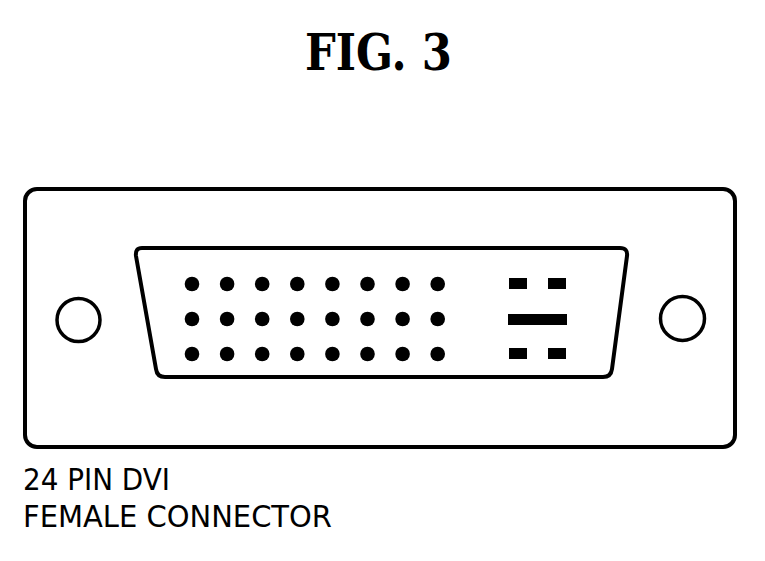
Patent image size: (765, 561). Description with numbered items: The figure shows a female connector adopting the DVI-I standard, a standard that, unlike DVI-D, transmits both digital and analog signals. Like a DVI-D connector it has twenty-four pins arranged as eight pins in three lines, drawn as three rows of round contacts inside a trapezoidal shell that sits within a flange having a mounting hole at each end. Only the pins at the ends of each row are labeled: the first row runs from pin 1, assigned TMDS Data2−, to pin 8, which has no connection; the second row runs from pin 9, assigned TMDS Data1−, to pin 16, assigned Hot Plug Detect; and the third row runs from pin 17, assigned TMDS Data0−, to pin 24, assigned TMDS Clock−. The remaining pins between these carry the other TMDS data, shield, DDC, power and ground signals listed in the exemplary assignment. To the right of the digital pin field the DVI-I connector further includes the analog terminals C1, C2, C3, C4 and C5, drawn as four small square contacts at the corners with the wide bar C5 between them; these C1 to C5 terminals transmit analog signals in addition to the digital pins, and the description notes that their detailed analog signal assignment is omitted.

The pin 1 is at (191, 248).
The pin 8 is at (437, 248).
The pin 9 is at (154, 321).
The pin 16 is at (459, 320).
The pin 17 is at (189, 385).
The pin 24 is at (436, 385).
The C1 terminal C1 is at (517, 247).
The C2 terminal C2 is at (557, 247).
The C3 terminal C3 is at (518, 385).
The C4 terminal C4 is at (557, 385).
The C5 terminal C5 is at (559, 321).